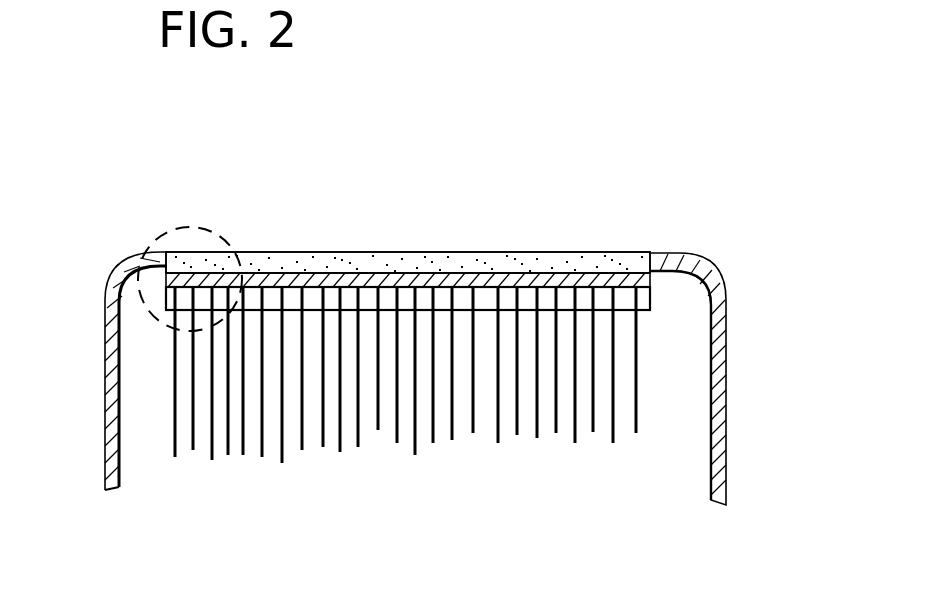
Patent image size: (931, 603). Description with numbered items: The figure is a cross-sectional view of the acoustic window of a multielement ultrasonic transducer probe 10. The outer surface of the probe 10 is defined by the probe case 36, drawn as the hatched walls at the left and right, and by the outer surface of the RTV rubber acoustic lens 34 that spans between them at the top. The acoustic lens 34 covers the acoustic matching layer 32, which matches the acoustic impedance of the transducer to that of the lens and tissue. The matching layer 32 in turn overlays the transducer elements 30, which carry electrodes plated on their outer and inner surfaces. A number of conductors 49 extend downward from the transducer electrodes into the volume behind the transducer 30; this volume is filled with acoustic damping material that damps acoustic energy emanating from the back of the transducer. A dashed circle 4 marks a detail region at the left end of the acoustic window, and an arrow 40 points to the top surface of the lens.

The detail circle 4 is at (157, 240).
The multielement ultrasonic transducer probe 10 is at (738, 338).
The transducer elements 30 is at (650, 302).
The acoustic matching layer 32 is at (456, 281).
The acoustic lens 34 is at (367, 260).
The probe case 36 is at (105, 352).
The cover layer 40 is at (293, 253).
The conductors 49 is at (165, 495).